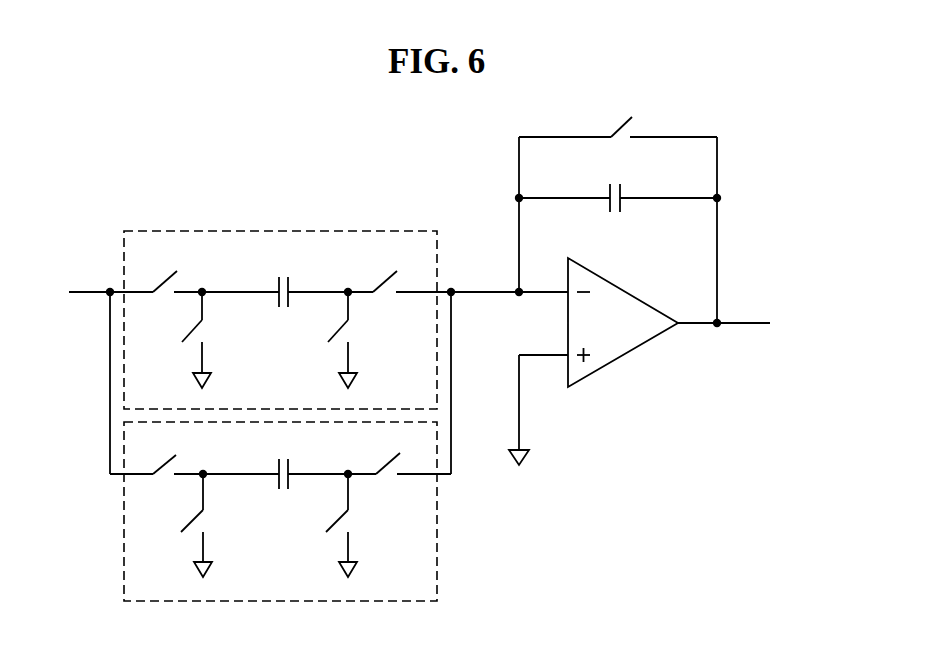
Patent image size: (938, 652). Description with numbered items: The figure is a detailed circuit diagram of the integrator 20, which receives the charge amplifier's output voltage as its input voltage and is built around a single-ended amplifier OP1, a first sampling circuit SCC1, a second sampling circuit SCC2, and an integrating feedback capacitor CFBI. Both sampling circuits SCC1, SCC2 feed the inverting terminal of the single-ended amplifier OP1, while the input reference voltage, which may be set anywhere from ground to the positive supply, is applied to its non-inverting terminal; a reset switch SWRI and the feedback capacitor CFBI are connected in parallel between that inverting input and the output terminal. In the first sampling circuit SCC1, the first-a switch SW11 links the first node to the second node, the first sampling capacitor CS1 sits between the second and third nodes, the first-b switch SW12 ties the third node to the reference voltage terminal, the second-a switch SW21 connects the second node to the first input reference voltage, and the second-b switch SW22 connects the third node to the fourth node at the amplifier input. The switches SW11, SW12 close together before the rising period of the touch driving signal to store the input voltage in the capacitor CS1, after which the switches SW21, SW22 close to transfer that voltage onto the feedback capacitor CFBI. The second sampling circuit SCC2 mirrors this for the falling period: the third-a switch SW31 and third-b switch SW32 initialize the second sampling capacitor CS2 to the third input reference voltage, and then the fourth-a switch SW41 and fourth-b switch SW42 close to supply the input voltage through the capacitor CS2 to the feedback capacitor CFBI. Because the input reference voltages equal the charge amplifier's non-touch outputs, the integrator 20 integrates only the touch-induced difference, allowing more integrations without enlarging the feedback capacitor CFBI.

The integrator 20 is at (156, 121).
The first sampling circuit SCC1 is at (280, 304).
The second sampling circuit SCC2 is at (280, 529).
The single-ended amplifier OP1 is at (623, 357).
The feedback capacitor CFBI is at (618, 184).
The reset switch SWRI is at (618, 113).
The first sampling capacitor CS1 is at (283, 278).
The second sampling capacitor CS2 is at (283, 464).
The 1a switch SW11 is at (175, 267).
The 1b switch SW12 is at (363, 347).
The 2a switch SW21 is at (238, 347).
The 2b switch SW22 is at (390, 267).
The 3a switch SW31 is at (238, 535).
The 3b switch SW32 is at (362, 534).
The 4a switch SW41 is at (174, 448).
The 4b switch SW42 is at (392, 449).